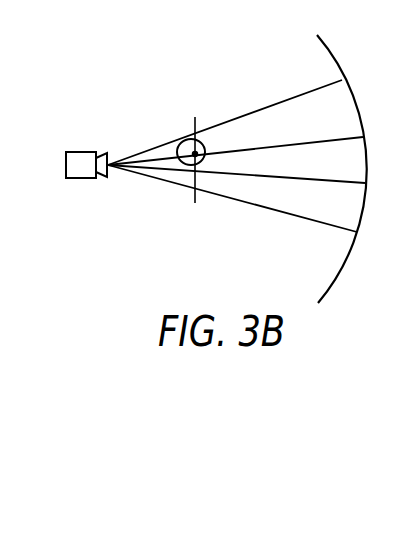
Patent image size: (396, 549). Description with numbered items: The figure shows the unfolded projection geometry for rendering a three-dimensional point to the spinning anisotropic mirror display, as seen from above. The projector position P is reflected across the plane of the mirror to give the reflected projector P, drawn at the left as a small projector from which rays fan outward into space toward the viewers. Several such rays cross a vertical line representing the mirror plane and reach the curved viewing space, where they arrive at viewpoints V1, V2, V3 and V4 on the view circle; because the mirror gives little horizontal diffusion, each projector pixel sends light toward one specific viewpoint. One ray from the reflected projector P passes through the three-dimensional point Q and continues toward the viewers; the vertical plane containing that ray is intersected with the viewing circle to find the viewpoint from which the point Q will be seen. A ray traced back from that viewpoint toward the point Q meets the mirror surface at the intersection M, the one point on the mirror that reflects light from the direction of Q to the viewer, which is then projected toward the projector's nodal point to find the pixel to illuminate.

The projector position P is at (95, 138).
The viewpoint on viewing space V1 is at (238, 117).
The viewpoint on viewing space V2 is at (247, 146).
The viewpoint on viewing space V3 is at (247, 181).
The viewpoint on viewing space V4 is at (244, 206).
The 3D point Q is at (250, 163).
The intersection point on mirror M is at (197, 153).